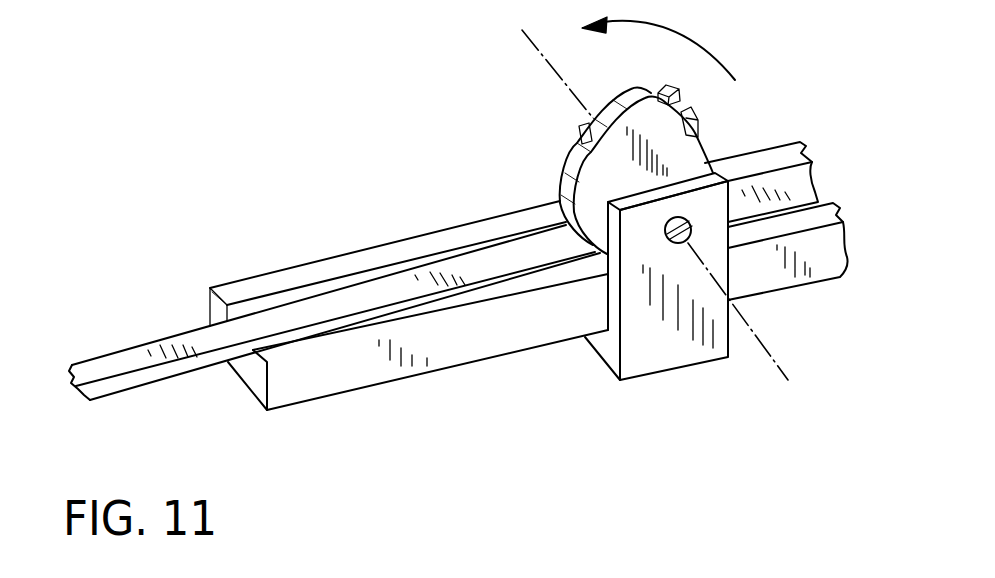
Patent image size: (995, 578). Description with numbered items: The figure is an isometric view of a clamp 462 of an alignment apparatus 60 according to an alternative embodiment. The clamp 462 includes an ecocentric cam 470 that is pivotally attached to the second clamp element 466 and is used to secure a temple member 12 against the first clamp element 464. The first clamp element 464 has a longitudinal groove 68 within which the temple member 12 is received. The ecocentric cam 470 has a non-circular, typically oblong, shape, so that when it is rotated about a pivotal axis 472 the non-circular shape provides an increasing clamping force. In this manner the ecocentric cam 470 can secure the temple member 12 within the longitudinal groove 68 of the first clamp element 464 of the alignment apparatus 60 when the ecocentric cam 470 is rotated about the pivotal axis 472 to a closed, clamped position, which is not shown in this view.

The temple member 12 is at (395, 290).
The alignment apparatus 60 is at (468, 409).
The longitudinal groove 68 is at (238, 307).
The clamp 462 is at (532, 178).
The first clamp element 464 is at (298, 270).
The second clamp element 466 is at (603, 354).
The ecocentric cam 470 is at (570, 173).
The pivotal axis 472 is at (782, 370).